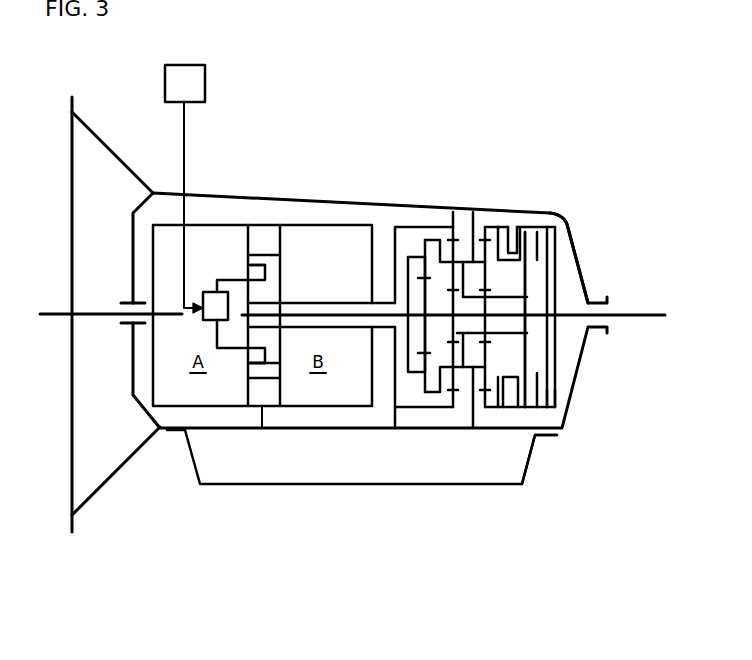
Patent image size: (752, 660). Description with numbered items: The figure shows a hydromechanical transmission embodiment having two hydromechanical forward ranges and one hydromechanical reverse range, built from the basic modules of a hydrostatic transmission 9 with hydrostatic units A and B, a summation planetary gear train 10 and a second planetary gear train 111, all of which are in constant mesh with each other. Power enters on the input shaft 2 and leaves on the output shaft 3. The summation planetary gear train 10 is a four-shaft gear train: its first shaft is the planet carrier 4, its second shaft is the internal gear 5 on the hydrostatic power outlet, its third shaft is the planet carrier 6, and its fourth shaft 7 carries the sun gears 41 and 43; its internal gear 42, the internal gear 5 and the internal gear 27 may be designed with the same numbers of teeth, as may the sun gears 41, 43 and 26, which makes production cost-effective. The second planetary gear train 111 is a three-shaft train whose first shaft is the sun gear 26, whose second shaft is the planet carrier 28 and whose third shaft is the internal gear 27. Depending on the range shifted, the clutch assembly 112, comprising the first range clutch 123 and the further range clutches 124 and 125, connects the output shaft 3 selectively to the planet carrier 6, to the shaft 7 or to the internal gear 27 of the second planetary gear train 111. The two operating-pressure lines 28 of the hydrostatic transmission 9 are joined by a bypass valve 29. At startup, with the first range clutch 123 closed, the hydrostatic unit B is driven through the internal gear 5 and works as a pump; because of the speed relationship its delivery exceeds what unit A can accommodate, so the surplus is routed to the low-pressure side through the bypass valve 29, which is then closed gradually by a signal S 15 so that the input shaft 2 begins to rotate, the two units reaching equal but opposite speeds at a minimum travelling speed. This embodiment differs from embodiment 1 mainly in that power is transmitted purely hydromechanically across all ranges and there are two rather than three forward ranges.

The housing 1 is at (166, 190).
The input shaft 2 is at (58, 313).
The output shaft 3 is at (618, 314).
The planet carrier 4 is at (410, 257).
The internal gear 5 is at (453, 228).
The planet carrier 6 is at (463, 260).
The fourth shaft 7 is at (517, 310).
The hydrostatic transmission 9 is at (257, 188).
The summation planetary gear train 10 is at (417, 197).
The control unit 15 is at (205, 83).
The sun gear 26 is at (487, 337).
The internal gear 27 is at (482, 409).
The planet carrier 28 is at (268, 367).
The bypass valve 29 is at (212, 292).
The sun gear 41 is at (421, 325).
The internal gear 42 is at (423, 391).
The sun gear 43 is at (452, 327).
The second planetary gear train 111 is at (493, 200).
The clutch assembly 112 is at (575, 223).
The first range clutch 123 is at (527, 410).
The brake disc 124 is at (542, 410).
The clutch disc 125 is at (505, 232).